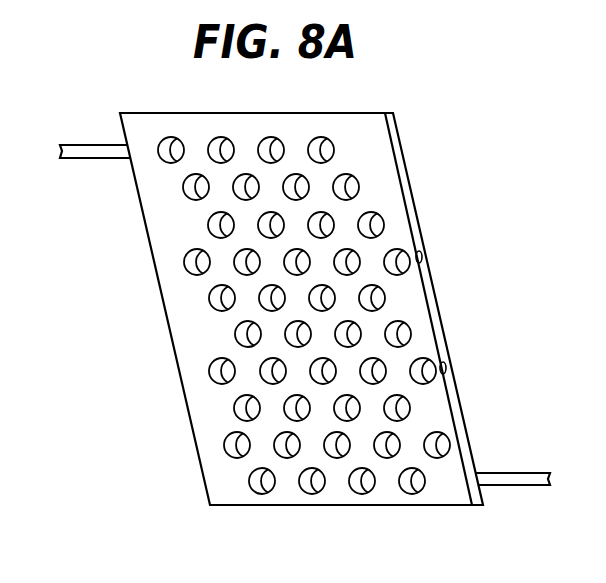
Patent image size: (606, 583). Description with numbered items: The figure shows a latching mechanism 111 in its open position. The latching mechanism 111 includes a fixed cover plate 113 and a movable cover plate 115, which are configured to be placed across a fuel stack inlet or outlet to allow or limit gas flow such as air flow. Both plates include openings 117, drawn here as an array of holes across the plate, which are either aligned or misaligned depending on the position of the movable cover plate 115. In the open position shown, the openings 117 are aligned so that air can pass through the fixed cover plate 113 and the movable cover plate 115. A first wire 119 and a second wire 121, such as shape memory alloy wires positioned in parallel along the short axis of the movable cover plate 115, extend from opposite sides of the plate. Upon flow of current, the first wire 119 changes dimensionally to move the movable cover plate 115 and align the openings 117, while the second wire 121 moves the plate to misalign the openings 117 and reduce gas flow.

The latching mechanism 111 is at (118, 461).
The fixed cover plate 113 is at (250, 488).
The movable cover plate 115 is at (392, 113).
The openings 117 is at (184, 262).
The first wire 119 is at (517, 486).
The second wire 121 is at (92, 159).